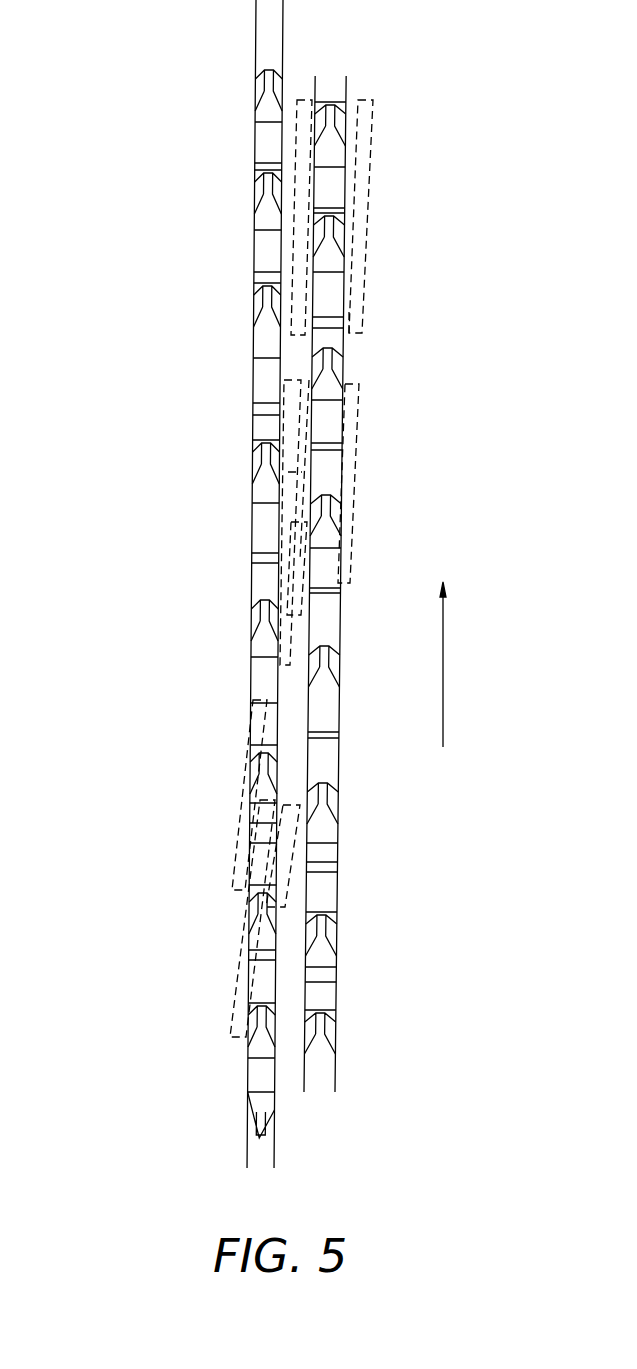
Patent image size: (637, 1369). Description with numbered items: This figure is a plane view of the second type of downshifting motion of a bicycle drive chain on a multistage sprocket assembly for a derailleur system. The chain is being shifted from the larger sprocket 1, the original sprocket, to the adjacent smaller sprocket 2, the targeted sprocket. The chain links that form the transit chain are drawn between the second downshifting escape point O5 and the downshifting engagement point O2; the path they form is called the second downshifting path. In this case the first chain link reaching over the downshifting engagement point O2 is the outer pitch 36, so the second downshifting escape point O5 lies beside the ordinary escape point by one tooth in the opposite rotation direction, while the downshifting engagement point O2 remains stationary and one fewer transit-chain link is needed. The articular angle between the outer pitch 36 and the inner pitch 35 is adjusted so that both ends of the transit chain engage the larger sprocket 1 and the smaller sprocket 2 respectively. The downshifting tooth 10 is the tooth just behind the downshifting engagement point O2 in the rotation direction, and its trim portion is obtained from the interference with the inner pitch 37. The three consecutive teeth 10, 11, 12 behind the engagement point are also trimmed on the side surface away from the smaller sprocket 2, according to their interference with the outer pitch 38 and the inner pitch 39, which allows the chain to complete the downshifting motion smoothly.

The larger sprocket 1 is at (262, 256).
The smaller sprocket 2 is at (325, 993).
The sprocket tooth of larger sprocket 10 is at (260, 616).
The sprocket tooth of larger sprocket 11 is at (273, 788).
The sprocket tooth of larger sprocket 12 is at (268, 920).
The downshifting engagement point O2 is at (267, 553).
The second downshifting escape point O5 is at (347, 320).
The inner pitch 35 is at (295, 366).
The outer pitch 36 is at (356, 422).
The inner pitch 37 is at (280, 628).
The outer pitch 38 is at (240, 837).
The inner pitch 39 is at (240, 972).